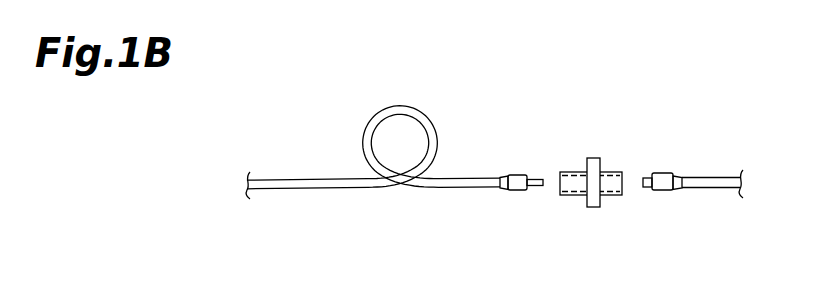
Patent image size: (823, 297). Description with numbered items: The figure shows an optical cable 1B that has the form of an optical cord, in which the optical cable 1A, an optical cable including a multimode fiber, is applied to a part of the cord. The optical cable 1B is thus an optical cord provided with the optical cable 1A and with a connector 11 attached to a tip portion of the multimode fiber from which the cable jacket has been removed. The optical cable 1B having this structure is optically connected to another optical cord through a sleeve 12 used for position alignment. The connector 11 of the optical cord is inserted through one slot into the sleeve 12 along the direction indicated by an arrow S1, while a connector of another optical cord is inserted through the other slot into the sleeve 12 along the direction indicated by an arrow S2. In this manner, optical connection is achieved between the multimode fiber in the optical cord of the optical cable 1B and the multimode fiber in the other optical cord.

The optical cable 1B is at (540, 94).
The optical cable 1A is at (351, 199).
The connector 11 is at (517, 190).
The sleeve 12 is at (578, 195).
The arrow S1 is at (557, 160).
The arrow S2 is at (665, 158).